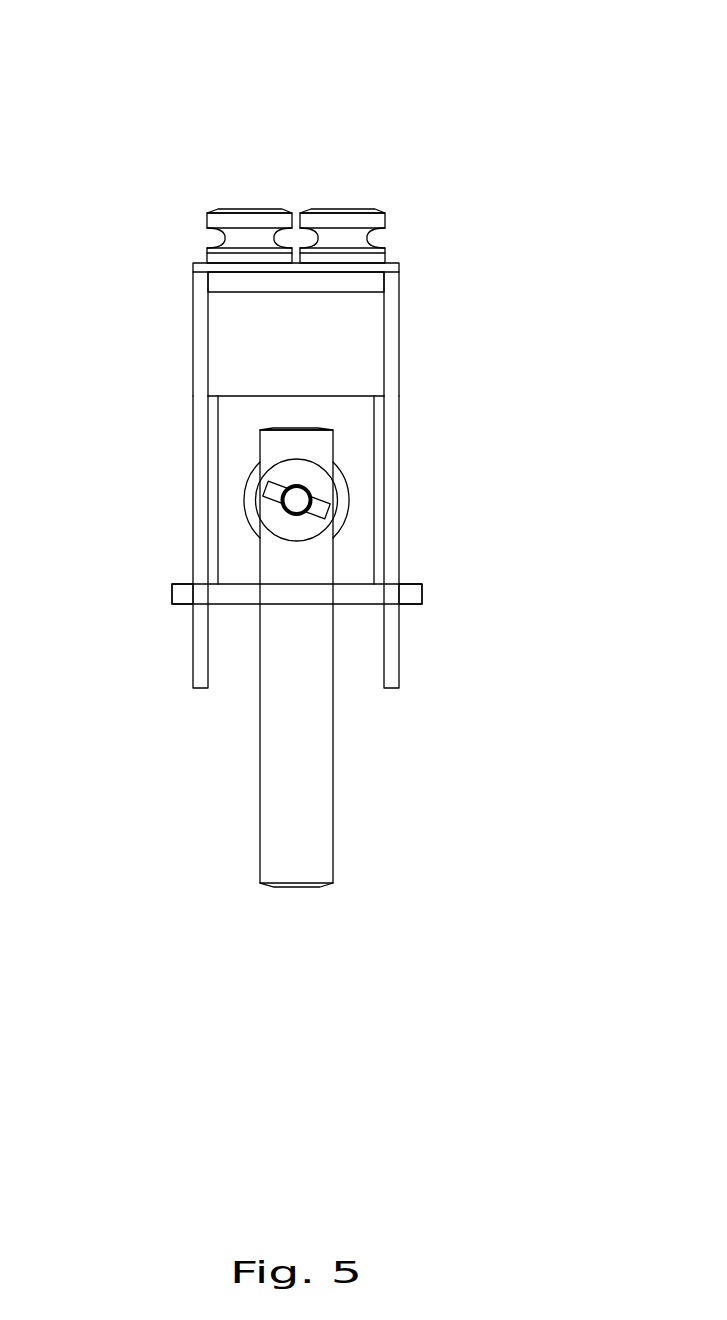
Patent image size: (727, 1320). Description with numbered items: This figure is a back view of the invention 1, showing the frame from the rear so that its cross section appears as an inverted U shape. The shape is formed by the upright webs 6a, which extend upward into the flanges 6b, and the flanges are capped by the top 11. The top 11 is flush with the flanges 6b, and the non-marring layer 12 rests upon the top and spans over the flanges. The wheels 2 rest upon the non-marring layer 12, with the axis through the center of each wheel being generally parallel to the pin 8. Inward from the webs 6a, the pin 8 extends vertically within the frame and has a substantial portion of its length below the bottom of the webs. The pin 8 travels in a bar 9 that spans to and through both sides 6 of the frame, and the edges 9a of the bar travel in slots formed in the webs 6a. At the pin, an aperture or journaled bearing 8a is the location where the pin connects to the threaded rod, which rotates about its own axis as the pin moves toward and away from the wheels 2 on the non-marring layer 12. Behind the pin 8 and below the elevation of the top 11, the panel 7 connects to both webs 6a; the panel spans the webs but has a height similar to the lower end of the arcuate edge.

The guide assembly 1 is at (307, 97).
The wheels 2 is at (218, 210).
The non-marring layer 12 is at (400, 262).
The top 11 is at (360, 282).
The sides 6 is at (200, 520).
The flanges 6b is at (203, 332).
The upright webs 6a is at (192, 660).
The panel 7 is at (237, 440).
The pin 8 is at (315, 832).
The aperture or journaled bearing 8a is at (307, 485).
The bar 9 is at (353, 604).
The edges of the bar 9a is at (178, 591).